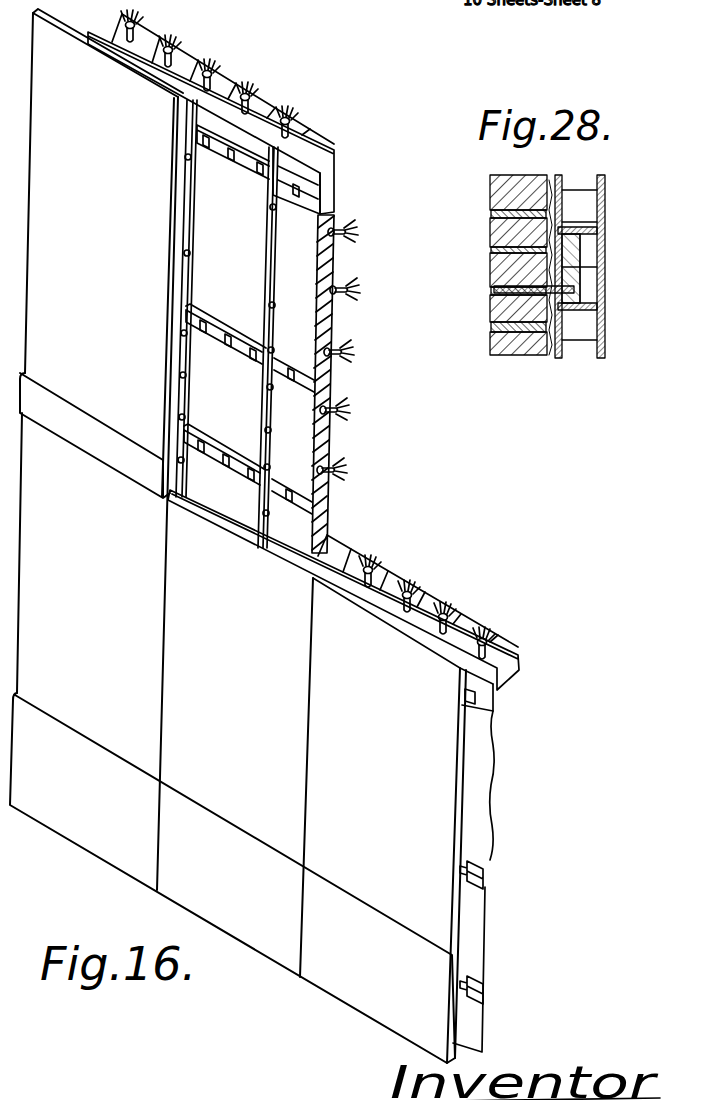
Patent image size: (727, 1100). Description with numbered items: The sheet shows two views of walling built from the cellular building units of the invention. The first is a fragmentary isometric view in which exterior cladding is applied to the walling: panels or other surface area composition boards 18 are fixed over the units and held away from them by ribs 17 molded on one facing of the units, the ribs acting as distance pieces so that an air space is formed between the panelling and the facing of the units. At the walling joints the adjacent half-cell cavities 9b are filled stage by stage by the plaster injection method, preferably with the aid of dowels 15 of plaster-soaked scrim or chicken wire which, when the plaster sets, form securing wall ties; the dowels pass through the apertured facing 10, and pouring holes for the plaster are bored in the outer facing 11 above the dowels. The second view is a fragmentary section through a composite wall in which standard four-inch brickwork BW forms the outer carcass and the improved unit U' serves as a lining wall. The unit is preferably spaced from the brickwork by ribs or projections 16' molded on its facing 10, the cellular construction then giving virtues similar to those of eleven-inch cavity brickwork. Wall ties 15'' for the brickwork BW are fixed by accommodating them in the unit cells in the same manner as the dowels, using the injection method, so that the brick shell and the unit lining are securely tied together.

In FIG. 16, the half-cell cavities 9b is at (240, 100).
In FIG. 16, the dowels 15 is at (395, 355).
In FIG. 16, the outer facing 11 is at (322, 146).
In FIG. 16, the facing 10 is at (310, 178).
In FIG. 28, the facing 10 is at (556, 179).
In FIG. 16, the ribs 17 is at (270, 442).
In FIG. 16, the panels or surface area composition boards 18 is at (402, 760).
In FIG. 28, the brickwork BW is at (484, 202).
In FIG. 28, the outer sheet v' is at (621, 266).
In FIG. 28, the ribs or projections 16' is at (572, 306).
In FIG. 28, the wall ties 15'' is at (510, 289).